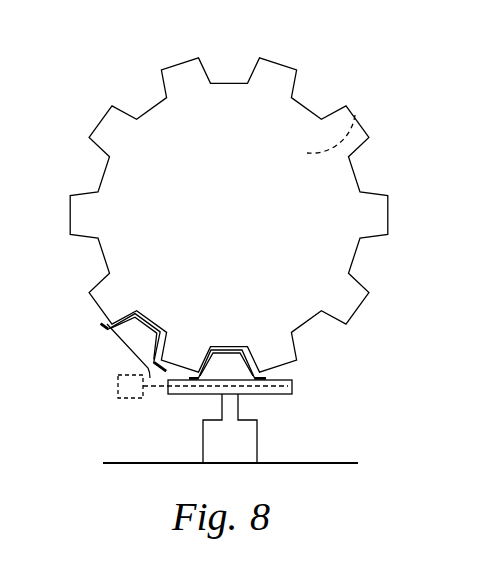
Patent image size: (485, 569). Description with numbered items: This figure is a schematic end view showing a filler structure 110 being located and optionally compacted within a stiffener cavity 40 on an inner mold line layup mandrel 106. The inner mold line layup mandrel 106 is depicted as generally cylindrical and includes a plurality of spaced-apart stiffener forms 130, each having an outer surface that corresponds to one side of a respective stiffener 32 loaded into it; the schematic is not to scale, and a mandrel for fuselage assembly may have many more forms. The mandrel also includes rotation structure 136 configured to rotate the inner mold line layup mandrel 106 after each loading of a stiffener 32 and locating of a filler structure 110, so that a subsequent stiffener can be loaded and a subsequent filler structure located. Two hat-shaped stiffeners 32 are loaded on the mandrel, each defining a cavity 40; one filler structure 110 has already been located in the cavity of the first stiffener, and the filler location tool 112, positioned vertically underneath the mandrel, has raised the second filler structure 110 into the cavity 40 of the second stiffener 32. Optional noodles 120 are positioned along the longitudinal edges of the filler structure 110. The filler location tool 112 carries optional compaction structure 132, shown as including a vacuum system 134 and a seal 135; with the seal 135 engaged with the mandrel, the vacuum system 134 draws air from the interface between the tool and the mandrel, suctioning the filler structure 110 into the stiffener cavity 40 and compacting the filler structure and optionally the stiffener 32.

The inner mold line layup mandrel 106 is at (203, 253).
The stiffener form 130 is at (207, 76).
The rotation structure 136 is at (360, 112).
The stiffener 32 is at (144, 337).
The cavity 40 is at (152, 330).
The filler structure 110 is at (127, 348).
The noodle 120 is at (110, 332).
The compaction structure 132 is at (288, 391).
The vacuum system 134 is at (133, 398).
The seal 135 is at (143, 386).
The filler location tool 112 is at (263, 436).